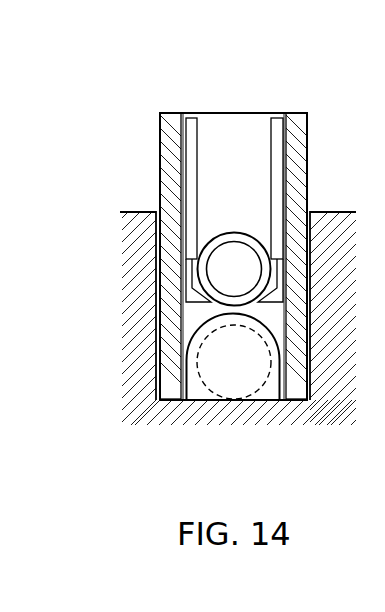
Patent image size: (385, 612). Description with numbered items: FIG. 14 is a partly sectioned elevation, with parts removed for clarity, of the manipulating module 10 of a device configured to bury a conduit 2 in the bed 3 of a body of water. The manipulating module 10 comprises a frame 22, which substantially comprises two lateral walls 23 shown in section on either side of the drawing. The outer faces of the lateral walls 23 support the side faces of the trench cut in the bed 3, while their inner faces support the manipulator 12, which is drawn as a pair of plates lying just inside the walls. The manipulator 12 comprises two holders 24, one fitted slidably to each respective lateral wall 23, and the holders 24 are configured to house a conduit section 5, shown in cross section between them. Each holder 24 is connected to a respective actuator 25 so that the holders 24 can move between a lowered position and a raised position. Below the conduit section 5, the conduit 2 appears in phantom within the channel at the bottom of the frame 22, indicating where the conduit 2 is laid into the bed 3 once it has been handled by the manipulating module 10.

The manipulating module 10 is at (160, 86).
The manipulator 12 is at (203, 137).
The frame 22 is at (148, 157).
The lateral wall 23 is at (166, 127).
The actuator 25 is at (170, 181).
The holder 24 is at (188, 318).
The conduit section 5 is at (252, 224).
The conduit 2 is at (200, 397).
The bed 3 is at (332, 224).